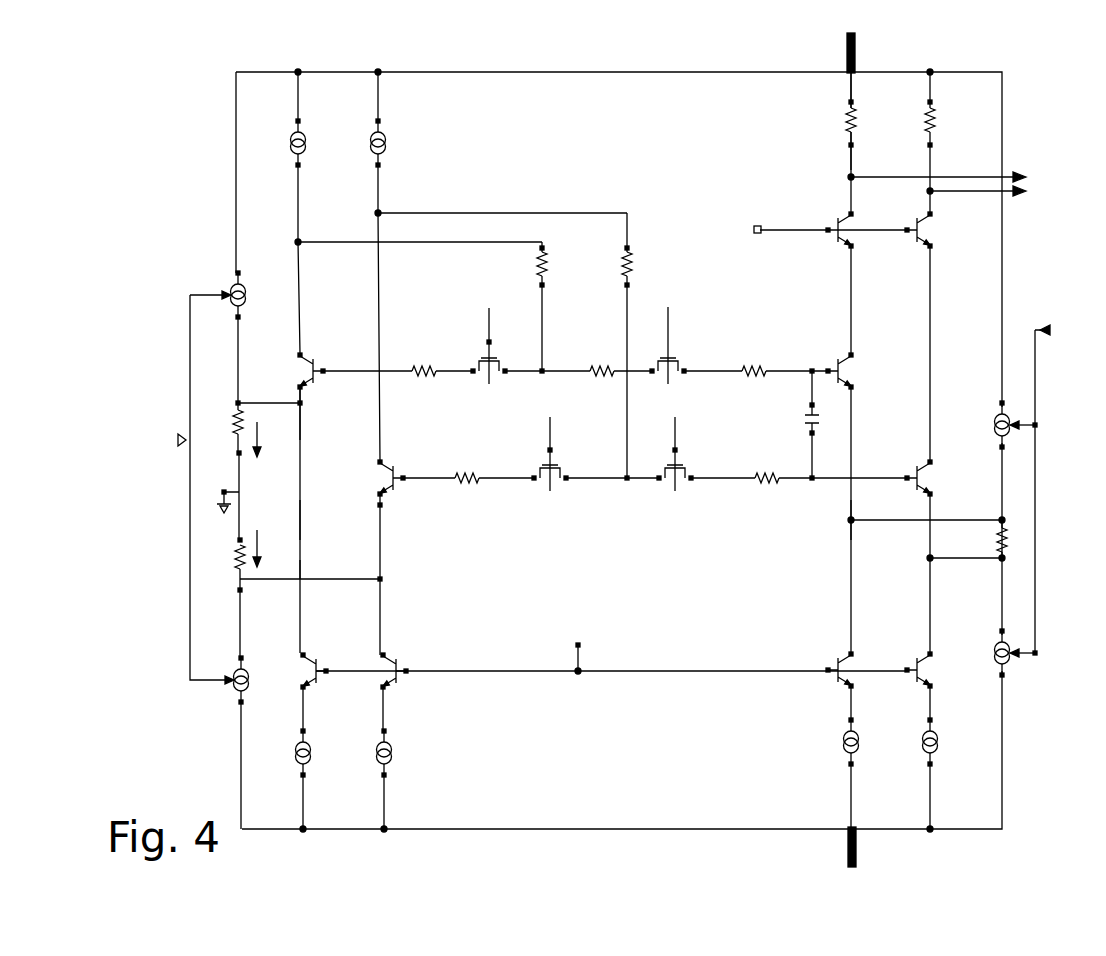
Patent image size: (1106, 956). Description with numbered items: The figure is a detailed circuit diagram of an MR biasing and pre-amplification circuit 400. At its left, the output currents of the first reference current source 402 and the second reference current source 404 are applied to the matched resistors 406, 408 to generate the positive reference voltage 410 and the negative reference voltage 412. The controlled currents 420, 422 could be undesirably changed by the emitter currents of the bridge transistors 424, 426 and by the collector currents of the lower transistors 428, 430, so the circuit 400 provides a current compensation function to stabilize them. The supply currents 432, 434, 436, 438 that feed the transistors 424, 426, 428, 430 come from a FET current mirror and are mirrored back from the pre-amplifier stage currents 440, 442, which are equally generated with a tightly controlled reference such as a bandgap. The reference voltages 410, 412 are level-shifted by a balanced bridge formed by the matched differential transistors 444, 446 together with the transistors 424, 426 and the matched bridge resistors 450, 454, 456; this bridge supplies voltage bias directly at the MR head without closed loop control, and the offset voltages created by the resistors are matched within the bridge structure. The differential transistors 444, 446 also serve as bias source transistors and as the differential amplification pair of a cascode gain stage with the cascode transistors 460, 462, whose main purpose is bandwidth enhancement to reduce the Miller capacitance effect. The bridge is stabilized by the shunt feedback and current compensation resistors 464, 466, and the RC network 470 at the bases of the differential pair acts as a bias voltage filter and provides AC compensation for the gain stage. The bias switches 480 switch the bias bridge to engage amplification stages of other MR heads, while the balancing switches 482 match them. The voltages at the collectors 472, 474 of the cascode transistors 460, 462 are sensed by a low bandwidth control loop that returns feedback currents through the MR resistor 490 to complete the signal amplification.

The MR biasing and pre-amplification circuit 400 is at (186, 70).
The current source IR1 402 is at (232, 281).
The current source IR2 404 is at (236, 692).
The resistor R10 406 is at (225, 592).
The resistor R11 408 is at (228, 410).
The reference voltage Vrp 410 is at (292, 384).
The reference voltage Vrn 412 is at (300, 570).
The controlled current IR11 420 is at (292, 428).
The controlled current IR10 422 is at (290, 533).
The transistor Q2 424 is at (311, 352).
The transistor Q3 426 is at (381, 458).
The transistor Q8 428 is at (311, 652).
The transistor Q9 430 is at (391, 653).
The current source I4 432 is at (333, 733).
The current source I5 434 is at (413, 738).
The current source I6 436 is at (338, 128).
The current source I7 438 is at (430, 128).
The pre-amplifier stage current I1 440 is at (838, 743).
The pre-amplifier stage current I3 442 is at (955, 755).
The transistor Q0 444 is at (855, 363).
The transistor Q1 446 is at (933, 472).
The resistor R0 450 is at (757, 333).
The resistor R2 454 is at (425, 338).
The resistor R3 456 is at (463, 492).
The cascode transistor Q6 460 is at (843, 207).
The cascode transistor Q7 462 is at (913, 240).
The resistor R4 464 is at (547, 267).
The resistor R5 466 is at (633, 265).
The RC network 470 is at (815, 528).
The collector of Q6 472 is at (1023, 166).
The collector of Q7 474 is at (1023, 200).
The switch S1 480 is at (693, 317).
The switch S0 482 is at (512, 325).
The MR resistor 490 is at (1017, 540).